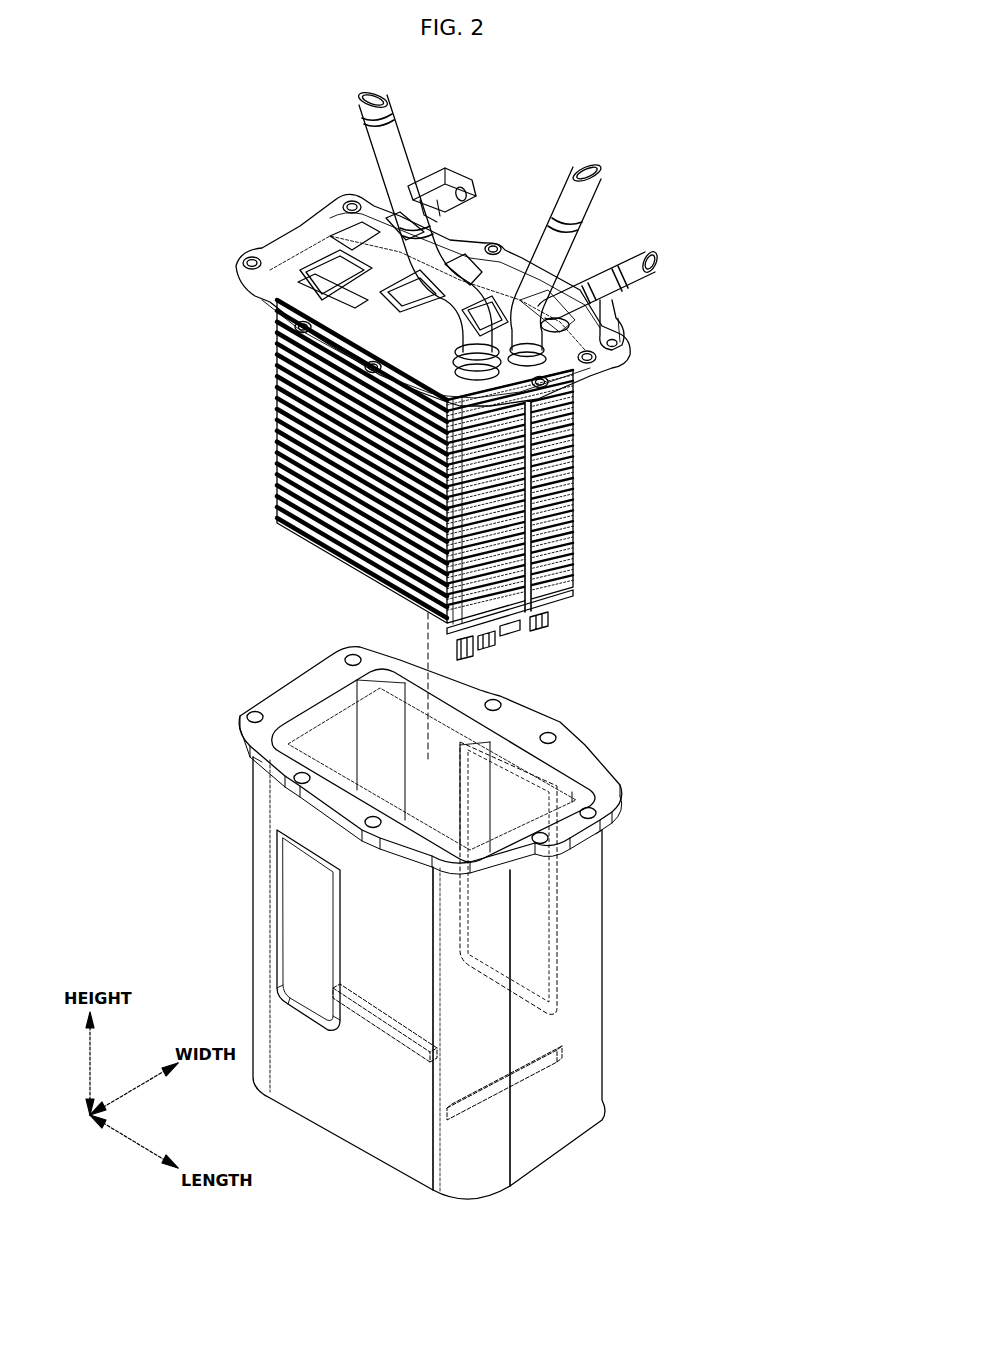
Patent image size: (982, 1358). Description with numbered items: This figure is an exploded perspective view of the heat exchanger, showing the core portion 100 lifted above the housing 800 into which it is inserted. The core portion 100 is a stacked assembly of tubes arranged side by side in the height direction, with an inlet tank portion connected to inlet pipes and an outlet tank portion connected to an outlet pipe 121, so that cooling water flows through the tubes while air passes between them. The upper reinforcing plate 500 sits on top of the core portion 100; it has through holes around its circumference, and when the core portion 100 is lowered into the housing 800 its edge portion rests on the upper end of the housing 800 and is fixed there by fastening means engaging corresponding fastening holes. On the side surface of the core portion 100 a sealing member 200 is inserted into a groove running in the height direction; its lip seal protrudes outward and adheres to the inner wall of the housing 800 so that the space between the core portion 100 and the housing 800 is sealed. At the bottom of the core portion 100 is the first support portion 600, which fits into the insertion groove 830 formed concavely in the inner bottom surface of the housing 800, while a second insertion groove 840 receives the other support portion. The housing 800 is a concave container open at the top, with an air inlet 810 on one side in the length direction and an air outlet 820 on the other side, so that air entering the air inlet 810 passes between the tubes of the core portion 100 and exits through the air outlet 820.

The core portion 100 is at (538, 540).
The outlet pipe 121 is at (585, 212).
The sealing member 200 is at (575, 495).
The upper reinforcing plate 500 is at (262, 248).
The first support portion 600 is at (520, 615).
The housing 800 is at (602, 902).
The air inlet 810 is at (268, 900).
The air outlet 820 is at (548, 782).
The insertion groove 830 is at (580, 1068).
The insertion groove 840 is at (378, 1036).